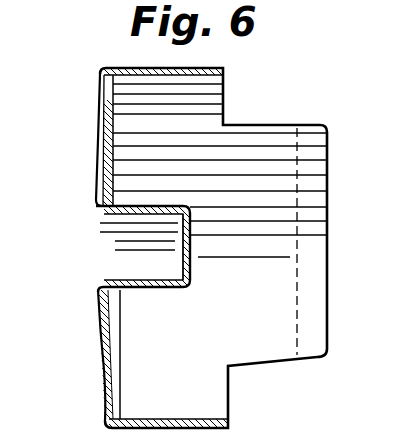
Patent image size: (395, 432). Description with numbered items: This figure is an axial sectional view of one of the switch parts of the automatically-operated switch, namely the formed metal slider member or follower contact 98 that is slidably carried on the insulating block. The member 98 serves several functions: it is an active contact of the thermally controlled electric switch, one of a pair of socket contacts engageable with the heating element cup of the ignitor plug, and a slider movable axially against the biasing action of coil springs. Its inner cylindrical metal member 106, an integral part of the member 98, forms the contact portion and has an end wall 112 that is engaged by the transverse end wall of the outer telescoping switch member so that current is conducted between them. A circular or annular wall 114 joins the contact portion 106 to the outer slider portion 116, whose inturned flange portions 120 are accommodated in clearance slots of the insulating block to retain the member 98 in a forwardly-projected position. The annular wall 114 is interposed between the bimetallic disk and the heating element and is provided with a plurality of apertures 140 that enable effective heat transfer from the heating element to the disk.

The slider member 98 is at (289, 106).
The inner cylindrical metal member 106 is at (158, 287).
The end wall 112 is at (190, 269).
The annular wall 114 is at (108, 110).
The slider portion 116 is at (190, 67).
The inturned flange portions 120 is at (305, 195).
The apertures 140 is at (100, 160).